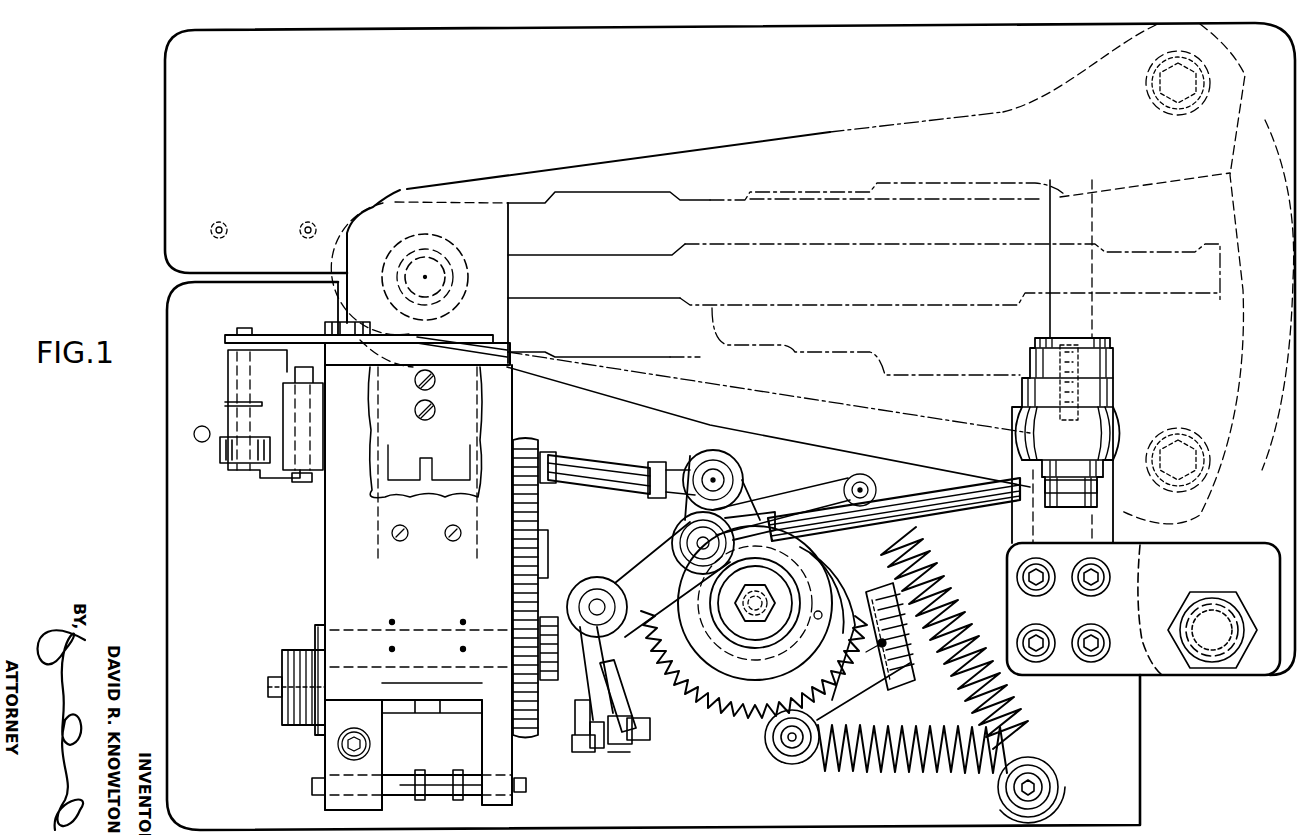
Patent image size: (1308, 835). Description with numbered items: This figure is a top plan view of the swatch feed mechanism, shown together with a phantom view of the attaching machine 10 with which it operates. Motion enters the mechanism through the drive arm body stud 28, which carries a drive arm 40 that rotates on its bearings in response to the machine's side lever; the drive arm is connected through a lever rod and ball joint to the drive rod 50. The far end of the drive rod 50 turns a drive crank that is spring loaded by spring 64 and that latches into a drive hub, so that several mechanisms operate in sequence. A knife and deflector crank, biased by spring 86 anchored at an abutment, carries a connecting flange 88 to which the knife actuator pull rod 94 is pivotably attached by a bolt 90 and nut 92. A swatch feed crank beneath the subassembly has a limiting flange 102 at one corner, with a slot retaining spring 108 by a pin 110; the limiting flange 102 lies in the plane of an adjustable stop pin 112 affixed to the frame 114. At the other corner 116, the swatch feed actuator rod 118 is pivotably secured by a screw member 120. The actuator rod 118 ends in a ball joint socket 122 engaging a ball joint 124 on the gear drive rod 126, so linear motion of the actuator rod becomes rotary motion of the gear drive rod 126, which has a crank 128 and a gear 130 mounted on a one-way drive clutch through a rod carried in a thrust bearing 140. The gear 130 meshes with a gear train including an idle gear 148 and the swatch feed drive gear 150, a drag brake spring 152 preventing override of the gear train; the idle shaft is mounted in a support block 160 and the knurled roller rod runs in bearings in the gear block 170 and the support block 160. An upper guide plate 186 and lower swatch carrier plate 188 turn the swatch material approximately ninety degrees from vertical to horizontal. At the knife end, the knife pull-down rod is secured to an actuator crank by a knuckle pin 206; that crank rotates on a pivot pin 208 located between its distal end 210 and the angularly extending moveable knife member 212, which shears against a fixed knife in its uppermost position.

The attaching machine 10 is at (702, 129).
The drive arm body stud 28 is at (1100, 493).
The drive arm 40 is at (1106, 430).
The drive rod 50 is at (952, 522).
The spring 64 is at (745, 726).
The spring 86 is at (868, 776).
The connecting flange 88 is at (750, 502).
The bolt 90 is at (718, 480).
The nut 92 is at (712, 468).
The knife actuator pull rod 94 is at (615, 462).
The limiting flange 102 is at (878, 484).
The spring 108 is at (1000, 704).
The pin 110 is at (858, 484).
The adjustable stop pin 112 is at (906, 690).
The frame 114 is at (860, 690).
The other corner 116 is at (458, 792).
The swatch feed actuator rod 118 is at (628, 698).
The screw member 120 is at (608, 598).
The ball joint socket 122 is at (632, 758).
The ball joint 124 is at (602, 760).
The gear drive rod 126 is at (596, 752).
The crank 128 is at (566, 742).
The gear 130 is at (516, 700).
The thrust bearing 140 is at (312, 745).
The idle gear 148 is at (542, 546).
The swatch feed drive gear 150 is at (532, 440).
The spring 152 is at (578, 596).
The support block 160 is at (342, 806).
The gear block 170 is at (495, 802).
The upper guide plate 186 is at (335, 540).
The lower swatch carrier plate 188 is at (470, 403).
The knuckle pin 206 is at (247, 330).
The pivot pin 208 is at (300, 480).
The distal end 210 is at (226, 337).
The moveable knife member 212 is at (290, 335).